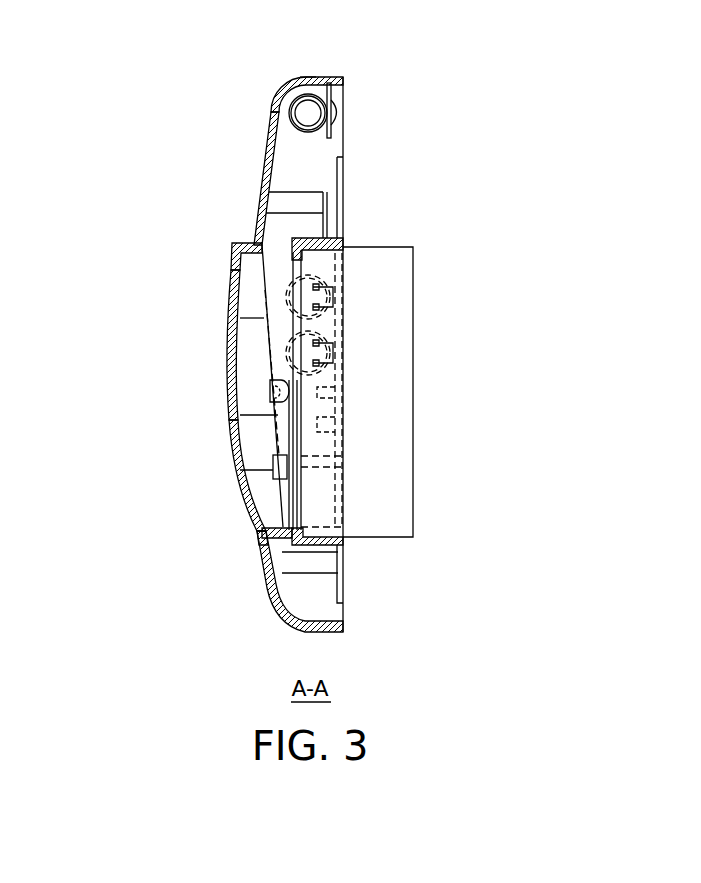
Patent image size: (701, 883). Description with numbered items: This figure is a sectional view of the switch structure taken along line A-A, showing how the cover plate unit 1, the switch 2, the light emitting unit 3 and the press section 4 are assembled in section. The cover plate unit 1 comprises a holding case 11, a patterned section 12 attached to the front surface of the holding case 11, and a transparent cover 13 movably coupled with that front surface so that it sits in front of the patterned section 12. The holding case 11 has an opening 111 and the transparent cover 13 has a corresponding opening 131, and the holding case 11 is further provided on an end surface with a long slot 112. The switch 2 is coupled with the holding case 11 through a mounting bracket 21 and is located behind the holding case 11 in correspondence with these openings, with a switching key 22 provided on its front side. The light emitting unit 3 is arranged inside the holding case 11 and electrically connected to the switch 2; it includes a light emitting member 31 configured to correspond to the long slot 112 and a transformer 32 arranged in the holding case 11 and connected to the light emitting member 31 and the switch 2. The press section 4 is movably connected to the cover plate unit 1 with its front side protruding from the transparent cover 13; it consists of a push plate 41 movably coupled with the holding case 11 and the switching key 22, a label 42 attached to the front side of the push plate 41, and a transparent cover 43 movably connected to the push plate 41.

The cover plate unit 1 is at (167, 95).
The holding case 11 is at (268, 114).
The patterned section 12 is at (262, 159).
The transparent cover 13 is at (257, 201).
The opening 111 is at (263, 541).
The long slot 112 is at (308, 77).
The opening 131 is at (259, 537).
The switch 2 is at (413, 490).
The mounting bracket 21 is at (298, 240).
The switching key 22 is at (281, 413).
The light emitting unit 3 is at (338, 98).
The light emitting member 31 is at (291, 118).
The transformer 32 is at (344, 272).
The press section 4 is at (158, 258).
The push plate 41 is at (238, 251).
The label 42 is at (237, 319).
The transparent cover 43 is at (229, 362).